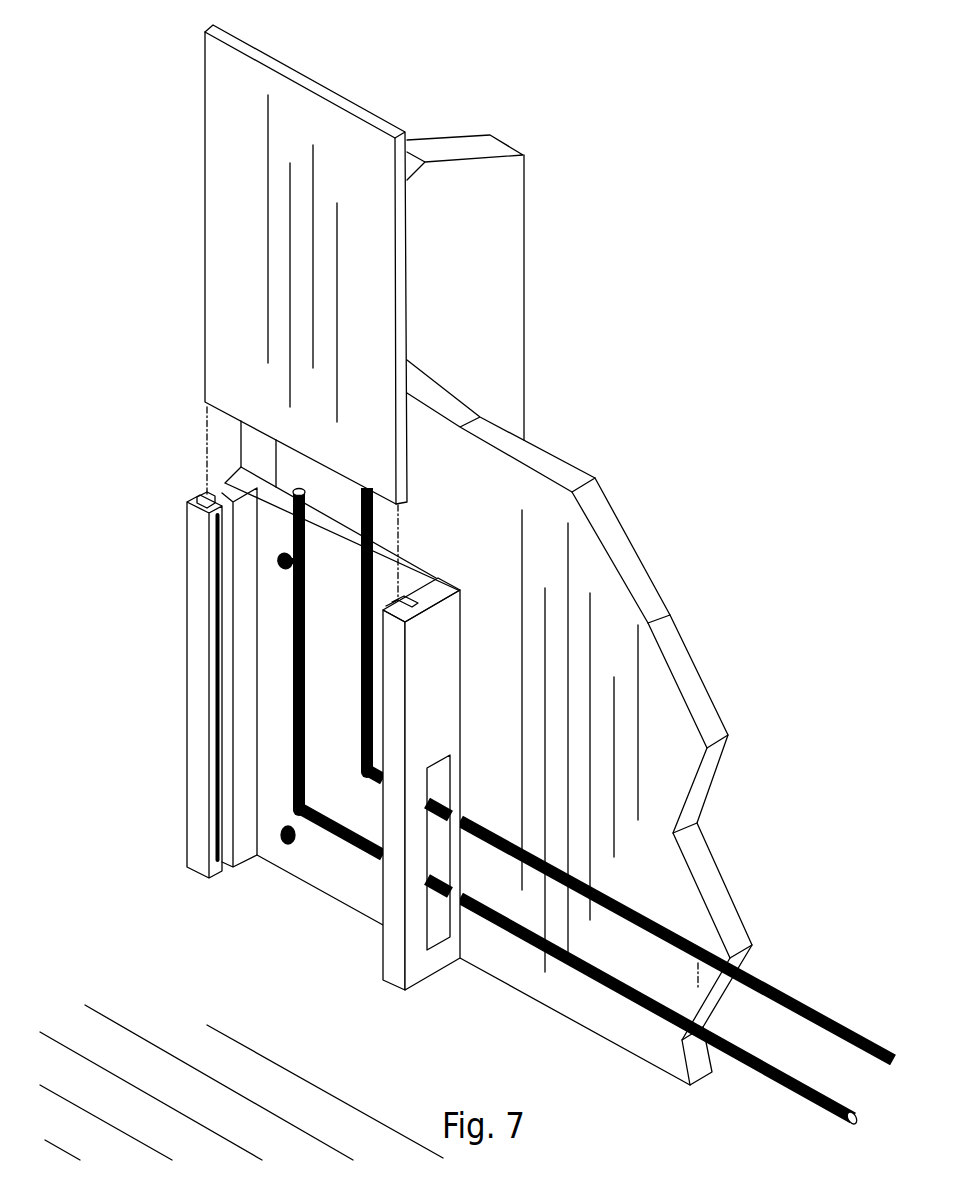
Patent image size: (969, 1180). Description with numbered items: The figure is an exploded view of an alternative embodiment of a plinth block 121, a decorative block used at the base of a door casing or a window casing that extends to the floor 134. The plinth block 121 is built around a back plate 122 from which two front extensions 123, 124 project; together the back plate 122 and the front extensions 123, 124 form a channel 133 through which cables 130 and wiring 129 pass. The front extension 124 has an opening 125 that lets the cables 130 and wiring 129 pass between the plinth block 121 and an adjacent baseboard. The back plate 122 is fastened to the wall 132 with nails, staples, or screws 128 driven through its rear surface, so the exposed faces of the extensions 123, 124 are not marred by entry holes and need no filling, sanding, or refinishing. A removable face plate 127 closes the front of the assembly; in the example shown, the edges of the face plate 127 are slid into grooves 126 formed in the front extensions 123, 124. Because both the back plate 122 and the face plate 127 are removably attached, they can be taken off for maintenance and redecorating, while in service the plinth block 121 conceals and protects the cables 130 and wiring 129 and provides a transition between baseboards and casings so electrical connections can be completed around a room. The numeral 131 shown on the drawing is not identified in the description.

The plinth block 121 is at (177, 997).
The back plate 122 is at (233, 487).
The front extension 123 is at (187, 828).
The front extension 124 is at (440, 675).
The opening 125 is at (440, 830).
The grooves 126 is at (200, 500).
The removable face plate 127 is at (203, 203).
The nails, staples, or screws 128 is at (280, 572).
The wiring 129 is at (623, 905).
The cables 130 is at (500, 918).
The bracket 131 is at (238, 443).
The wall 132 is at (688, 987).
The channel 133 is at (289, 544).
The floor 134 is at (452, 1077).